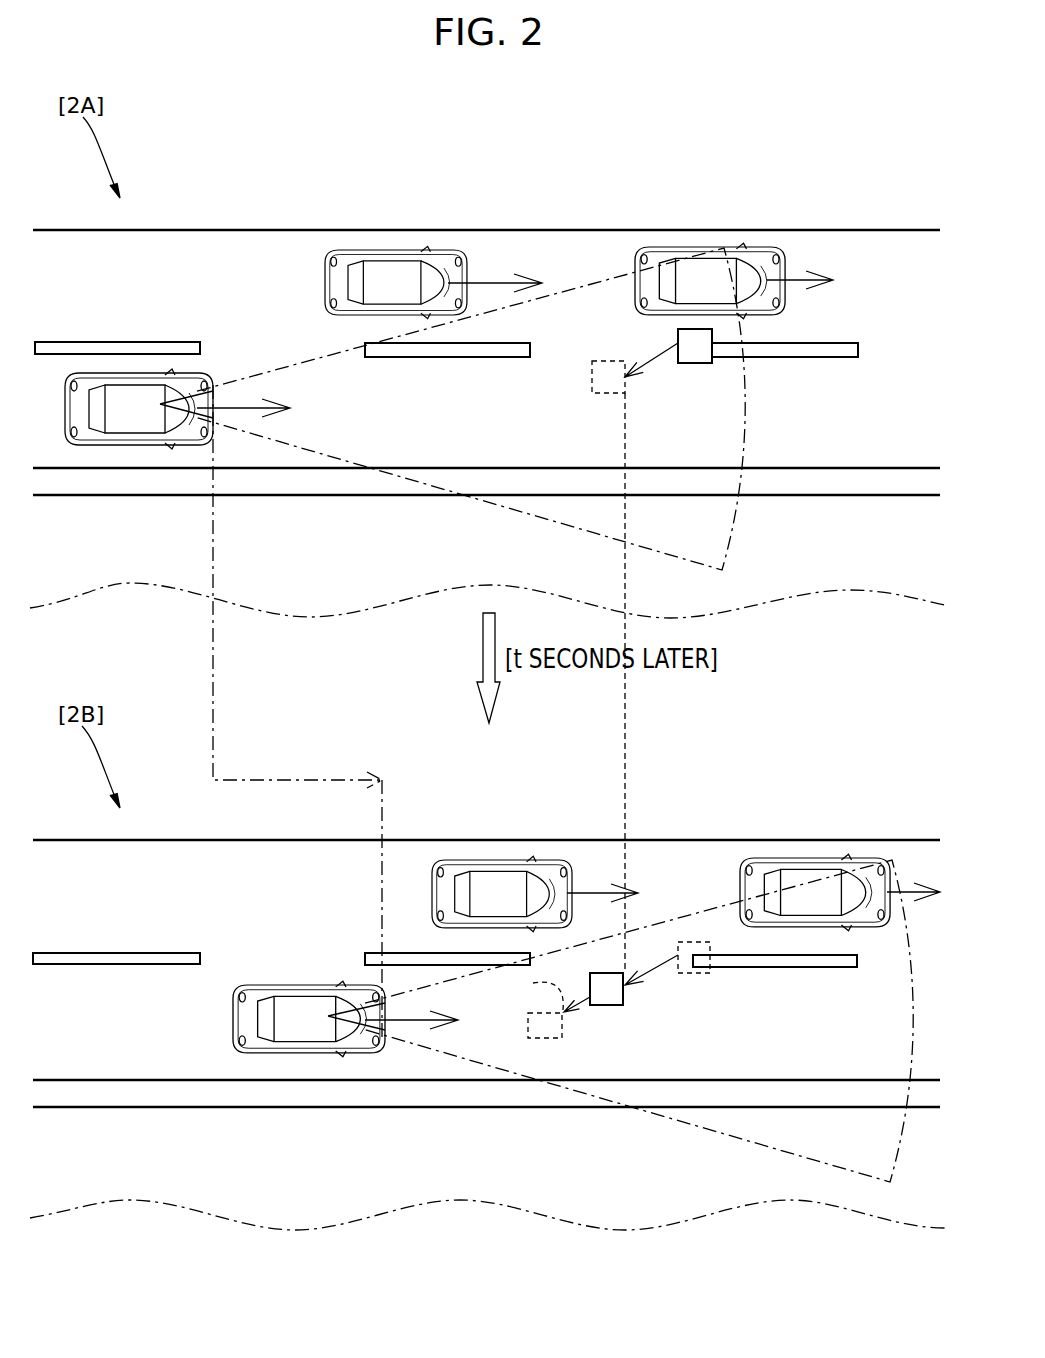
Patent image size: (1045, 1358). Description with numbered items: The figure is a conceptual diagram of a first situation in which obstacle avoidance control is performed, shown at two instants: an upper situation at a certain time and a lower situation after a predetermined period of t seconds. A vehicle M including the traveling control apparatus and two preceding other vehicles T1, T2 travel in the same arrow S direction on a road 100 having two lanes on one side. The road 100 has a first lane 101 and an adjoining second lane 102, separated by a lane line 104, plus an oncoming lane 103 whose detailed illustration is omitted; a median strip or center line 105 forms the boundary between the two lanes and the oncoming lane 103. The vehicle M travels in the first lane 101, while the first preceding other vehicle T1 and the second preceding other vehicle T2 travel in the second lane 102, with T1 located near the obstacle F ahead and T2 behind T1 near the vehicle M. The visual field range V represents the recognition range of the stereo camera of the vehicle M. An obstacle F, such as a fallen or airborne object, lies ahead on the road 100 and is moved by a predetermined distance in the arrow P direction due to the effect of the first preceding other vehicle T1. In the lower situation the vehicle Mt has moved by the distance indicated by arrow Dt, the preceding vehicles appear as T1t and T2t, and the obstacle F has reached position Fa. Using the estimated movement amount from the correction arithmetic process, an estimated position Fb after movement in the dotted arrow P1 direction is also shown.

The road 100 is at (888, 267).
The first lane 101 is at (832, 362).
The second lane 102 is at (832, 235).
The oncoming lane 103 is at (832, 500).
The lane line 104 is at (175, 342).
The median strip or center line 105 is at (268, 487).
The vehicle M is at (125, 418).
The vehicle after elapse of predetermined period Mt is at (290, 1030).
The first preceding other vehicle T1 is at (690, 270).
The second preceding other vehicle T2 is at (378, 273).
The first preceding other vehicle after elapse of predetermined period T1t is at (793, 880).
The second preceding other vehicle after elapse of predetermined period T2t is at (486, 883).
The arrow S direction S is at (236, 404).
The obstacle F is at (690, 360).
The position after movement of obstacle Fa is at (602, 395).
The estimated position of obstacle Fb is at (544, 1038).
The arrow P direction P is at (655, 359).
The arrow P1 direction P1 is at (531, 991).
The visual field range V is at (672, 554).
The arrow Dt is at (297, 711).